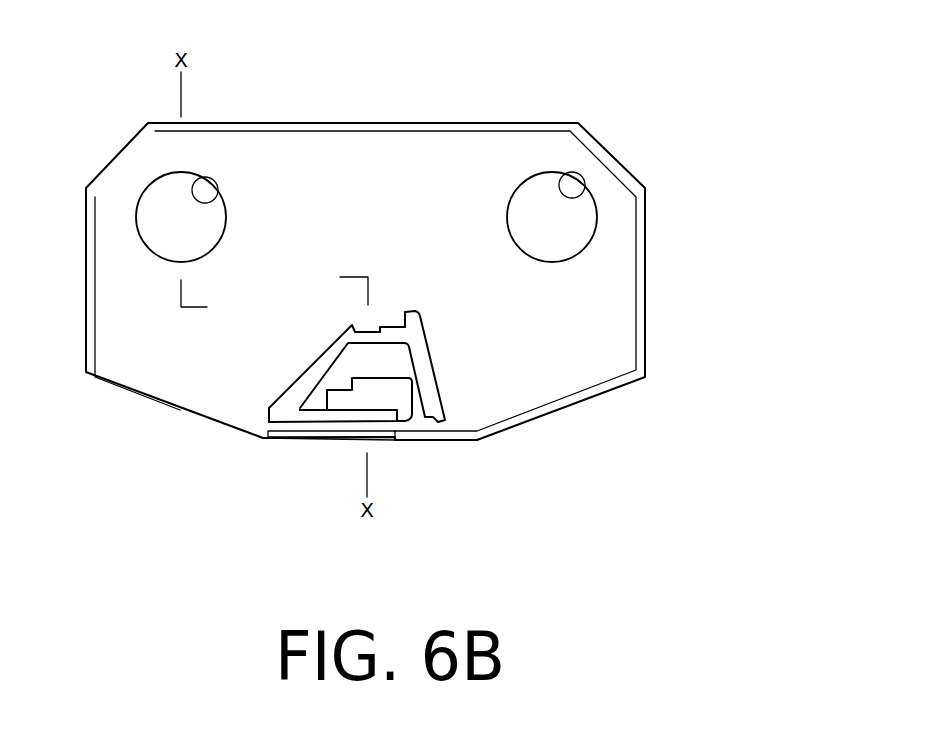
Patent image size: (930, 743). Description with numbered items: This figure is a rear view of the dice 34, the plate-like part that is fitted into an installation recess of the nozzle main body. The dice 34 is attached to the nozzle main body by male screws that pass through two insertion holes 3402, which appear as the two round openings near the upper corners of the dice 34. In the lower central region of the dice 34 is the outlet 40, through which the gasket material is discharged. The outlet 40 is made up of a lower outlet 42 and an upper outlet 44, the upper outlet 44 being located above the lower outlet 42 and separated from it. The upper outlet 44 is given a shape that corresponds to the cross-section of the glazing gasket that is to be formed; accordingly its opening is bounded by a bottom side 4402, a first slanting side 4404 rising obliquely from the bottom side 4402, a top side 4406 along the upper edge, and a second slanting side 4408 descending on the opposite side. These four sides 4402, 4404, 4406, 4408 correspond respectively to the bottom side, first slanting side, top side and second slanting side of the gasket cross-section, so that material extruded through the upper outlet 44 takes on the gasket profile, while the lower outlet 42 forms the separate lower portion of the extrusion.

The dice 34 is at (590, 112).
The insertion hole 3402 is at (221, 191).
The outlet 40 is at (442, 335).
The lower outlet 42 is at (322, 450).
The upper outlet 44 is at (393, 359).
The bottom side 4402 is at (295, 424).
The first slanting side 4404 is at (316, 362).
The top side 4406 is at (378, 328).
The second slanting side 4408 is at (440, 385).